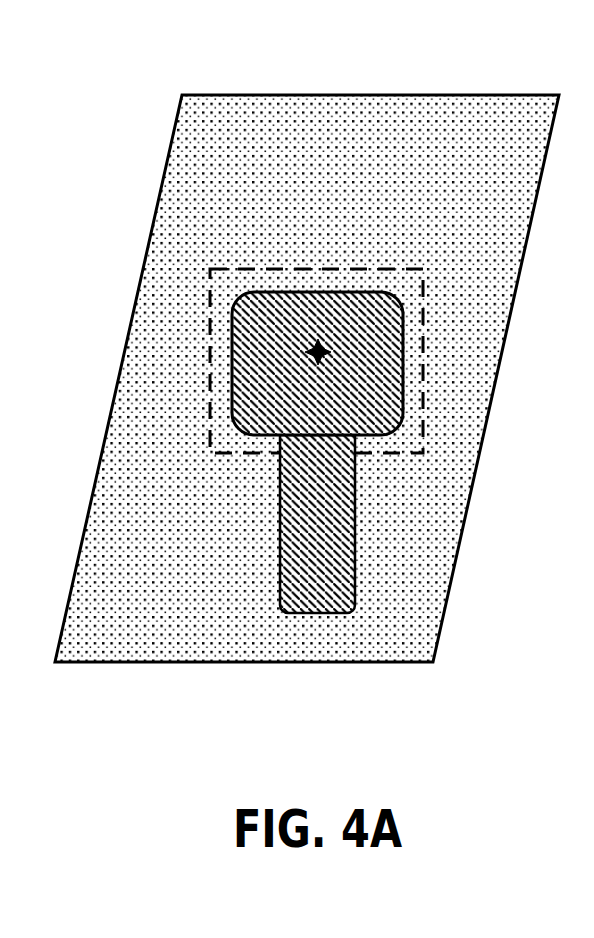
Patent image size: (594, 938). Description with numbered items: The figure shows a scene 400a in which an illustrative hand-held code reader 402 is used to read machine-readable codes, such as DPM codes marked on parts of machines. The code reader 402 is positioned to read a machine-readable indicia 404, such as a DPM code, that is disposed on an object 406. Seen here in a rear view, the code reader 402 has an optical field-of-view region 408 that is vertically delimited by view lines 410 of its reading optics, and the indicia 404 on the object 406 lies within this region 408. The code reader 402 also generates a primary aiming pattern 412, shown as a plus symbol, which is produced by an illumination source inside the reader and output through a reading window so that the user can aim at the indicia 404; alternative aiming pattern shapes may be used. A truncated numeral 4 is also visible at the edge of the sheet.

The device assembly 400a is at (346, 62).
The substrate 406 is at (243, 93).
The truncated reference numeral 4 is at (585, 110).
The dashed region boundary 408 is at (230, 262).
The hatched head element 402 is at (231, 345).
The stem element 410 is at (318, 352).
The center point 412 is at (318, 352).
The hatched region feature 404 is at (318, 352).